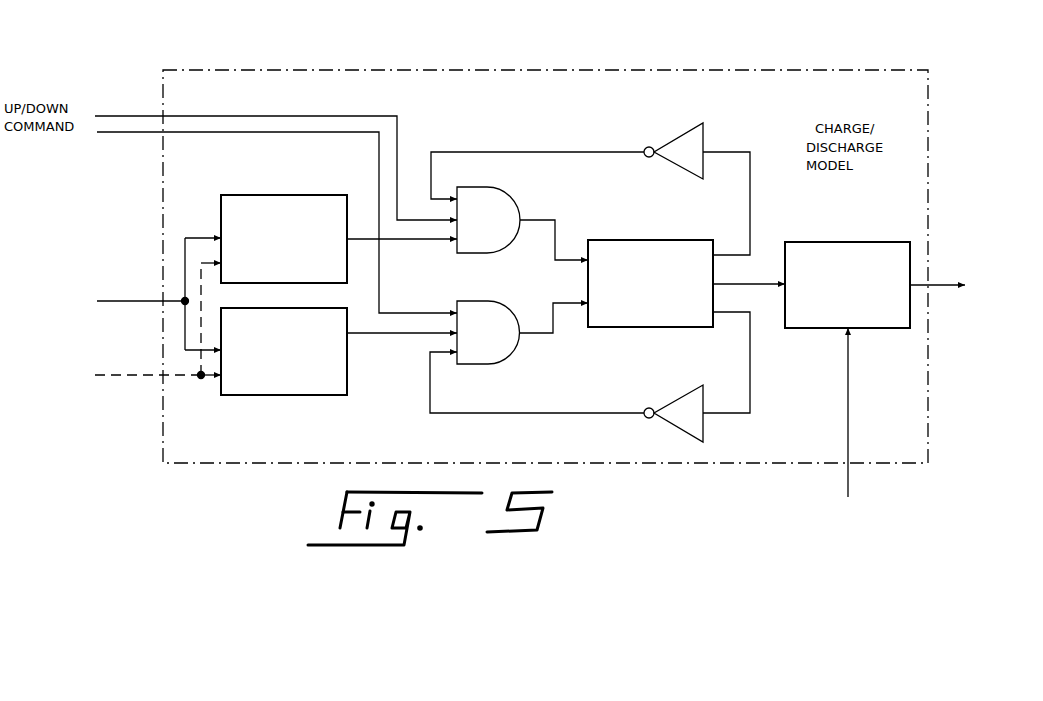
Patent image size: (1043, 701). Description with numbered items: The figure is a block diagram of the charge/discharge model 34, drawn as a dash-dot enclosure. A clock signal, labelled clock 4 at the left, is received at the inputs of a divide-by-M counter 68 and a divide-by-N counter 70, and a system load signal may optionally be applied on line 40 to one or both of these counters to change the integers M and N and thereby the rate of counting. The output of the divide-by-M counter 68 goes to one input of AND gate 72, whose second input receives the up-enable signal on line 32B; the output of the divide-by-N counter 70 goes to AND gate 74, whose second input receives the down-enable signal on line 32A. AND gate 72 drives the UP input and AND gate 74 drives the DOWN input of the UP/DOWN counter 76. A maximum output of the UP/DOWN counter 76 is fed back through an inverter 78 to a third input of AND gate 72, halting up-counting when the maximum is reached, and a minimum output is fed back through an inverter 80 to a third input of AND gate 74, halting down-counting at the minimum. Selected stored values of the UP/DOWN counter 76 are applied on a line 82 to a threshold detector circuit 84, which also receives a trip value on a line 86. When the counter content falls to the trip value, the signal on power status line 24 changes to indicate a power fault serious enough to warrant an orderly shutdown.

The clock 4 is at (119, 294).
The power status line 24 is at (943, 282).
The down-enable line 32A is at (138, 133).
The up-enable line 32B is at (142, 113).
The charge/discharge model 34 is at (930, 105).
The system load line 40 is at (143, 377).
The divide-by-M counter 68 is at (273, 195).
The divide-by-N counter 70 is at (293, 396).
The AND gate 72 is at (513, 198).
The AND gate 74 is at (513, 350).
The UP/DOWN counter 76 is at (653, 240).
The inverter 78 is at (693, 127).
The inverter 80 is at (688, 395).
The line 82 is at (767, 255).
The threshold detector circuit 84 is at (840, 242).
The line 86 is at (848, 475).